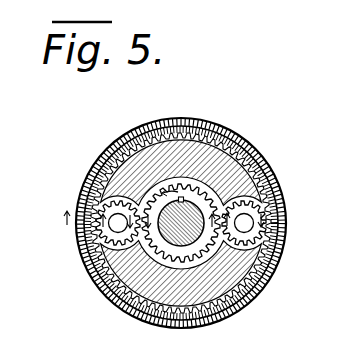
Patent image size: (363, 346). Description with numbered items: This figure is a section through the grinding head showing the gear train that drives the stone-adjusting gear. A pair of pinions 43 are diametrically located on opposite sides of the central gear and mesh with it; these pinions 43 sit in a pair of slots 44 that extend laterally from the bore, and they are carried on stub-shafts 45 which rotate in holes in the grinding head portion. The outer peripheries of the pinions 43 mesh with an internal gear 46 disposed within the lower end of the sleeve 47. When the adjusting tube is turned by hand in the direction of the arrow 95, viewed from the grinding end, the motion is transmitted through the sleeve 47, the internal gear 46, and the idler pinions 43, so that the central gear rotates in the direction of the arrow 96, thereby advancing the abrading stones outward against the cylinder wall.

The arrow 95 is at (170, 109).
The arrow 96 is at (182, 183).
The sleeve 47 is at (262, 157).
The internal gear 46 is at (110, 294).
The pinions 43 is at (94, 191).
The slots 44 is at (127, 262).
The stub-shafts 45 is at (112, 222).